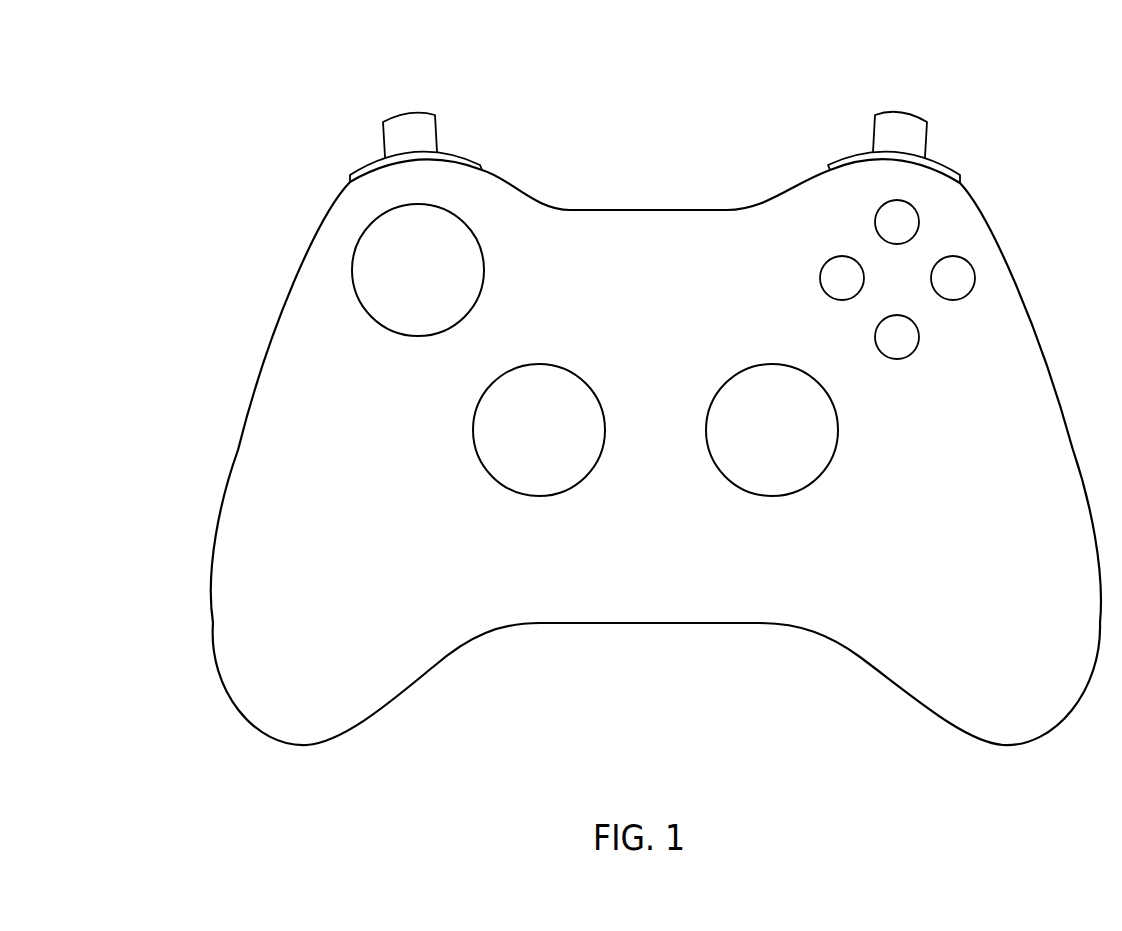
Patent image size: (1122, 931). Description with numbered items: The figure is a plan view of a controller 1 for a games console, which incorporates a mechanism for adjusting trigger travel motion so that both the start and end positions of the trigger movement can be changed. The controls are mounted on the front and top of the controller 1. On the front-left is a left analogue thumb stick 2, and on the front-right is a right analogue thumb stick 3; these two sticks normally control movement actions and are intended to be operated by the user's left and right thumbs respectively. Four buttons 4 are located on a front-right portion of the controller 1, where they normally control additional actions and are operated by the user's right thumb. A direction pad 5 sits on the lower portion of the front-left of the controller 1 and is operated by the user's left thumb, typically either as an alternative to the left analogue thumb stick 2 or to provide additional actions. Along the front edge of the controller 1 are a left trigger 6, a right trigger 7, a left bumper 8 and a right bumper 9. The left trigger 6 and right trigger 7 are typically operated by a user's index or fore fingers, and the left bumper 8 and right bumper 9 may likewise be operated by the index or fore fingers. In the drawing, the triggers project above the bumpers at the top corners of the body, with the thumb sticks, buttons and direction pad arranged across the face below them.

The controller 1 is at (247, 132).
The left analogue thumb stick 2 is at (355, 248).
The right analogue thumb stick 3 is at (763, 465).
The four buttons 4 is at (900, 277).
The direction pad 5 is at (537, 467).
The left trigger 6 is at (405, 120).
The right trigger 7 is at (902, 122).
The left bumper 8 is at (370, 168).
The right bumper 9 is at (848, 160).